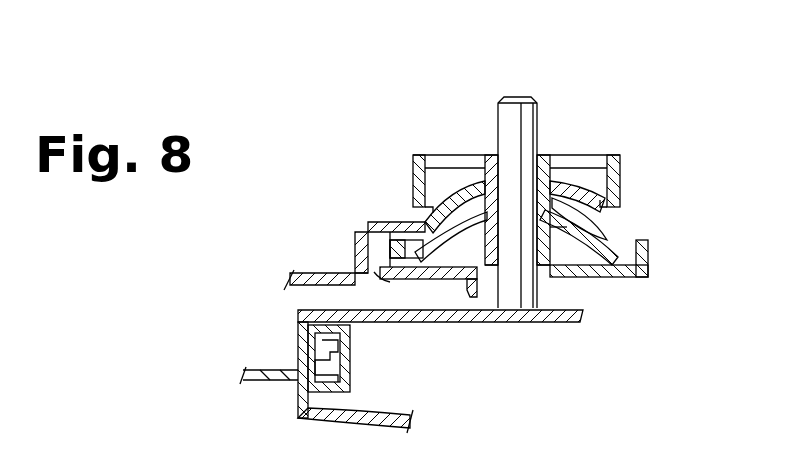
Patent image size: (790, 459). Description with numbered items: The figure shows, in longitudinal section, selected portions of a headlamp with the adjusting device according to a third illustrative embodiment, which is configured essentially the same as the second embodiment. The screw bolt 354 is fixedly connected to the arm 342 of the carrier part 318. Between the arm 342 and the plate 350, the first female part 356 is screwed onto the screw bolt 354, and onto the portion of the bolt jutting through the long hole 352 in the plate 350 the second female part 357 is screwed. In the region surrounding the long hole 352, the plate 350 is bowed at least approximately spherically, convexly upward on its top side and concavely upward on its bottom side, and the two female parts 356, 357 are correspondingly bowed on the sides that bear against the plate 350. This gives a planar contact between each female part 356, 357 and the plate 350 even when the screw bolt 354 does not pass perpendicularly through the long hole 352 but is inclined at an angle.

The carrier part 318 is at (255, 368).
The arm 342 is at (563, 322).
The plate 350 is at (367, 220).
The long hole 352 is at (547, 183).
The screw bolt 354 is at (537, 290).
The first female part 356 is at (640, 262).
The second female part 357 is at (617, 178).